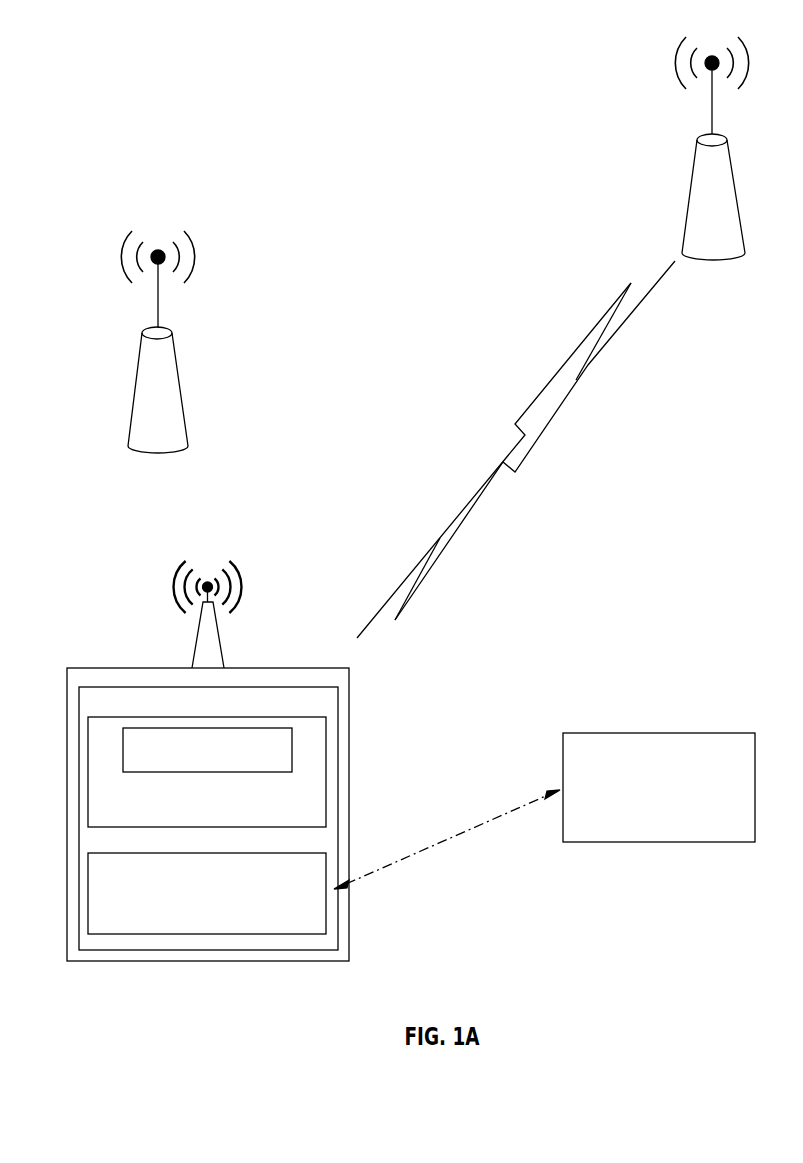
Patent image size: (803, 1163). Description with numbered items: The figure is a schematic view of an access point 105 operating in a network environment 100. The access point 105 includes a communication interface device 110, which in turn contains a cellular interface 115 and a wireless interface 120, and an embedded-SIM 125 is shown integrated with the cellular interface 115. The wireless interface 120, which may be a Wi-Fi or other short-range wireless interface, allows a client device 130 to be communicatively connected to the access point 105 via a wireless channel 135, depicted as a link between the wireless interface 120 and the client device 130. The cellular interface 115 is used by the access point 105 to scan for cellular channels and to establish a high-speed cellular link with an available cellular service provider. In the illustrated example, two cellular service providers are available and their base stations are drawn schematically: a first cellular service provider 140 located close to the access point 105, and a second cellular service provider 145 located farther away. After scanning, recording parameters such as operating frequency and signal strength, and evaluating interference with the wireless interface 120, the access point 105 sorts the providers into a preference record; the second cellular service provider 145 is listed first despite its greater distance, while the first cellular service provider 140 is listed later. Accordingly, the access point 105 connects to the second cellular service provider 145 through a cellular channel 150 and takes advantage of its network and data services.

The network environment 100 is at (418, 30).
The access point 105 is at (83, 668).
The communication interface device 110 is at (222, 712).
The cellular interface 115 is at (304, 811).
The wireless interface 120 is at (309, 906).
The embedded-SIM 125 is at (258, 761).
The client device 130 is at (666, 733).
The wireless channel 135 is at (477, 819).
The first cellular service provider 140 is at (131, 403).
The second cellular service provider 145 is at (689, 193).
The cellular channel 150 is at (533, 362).